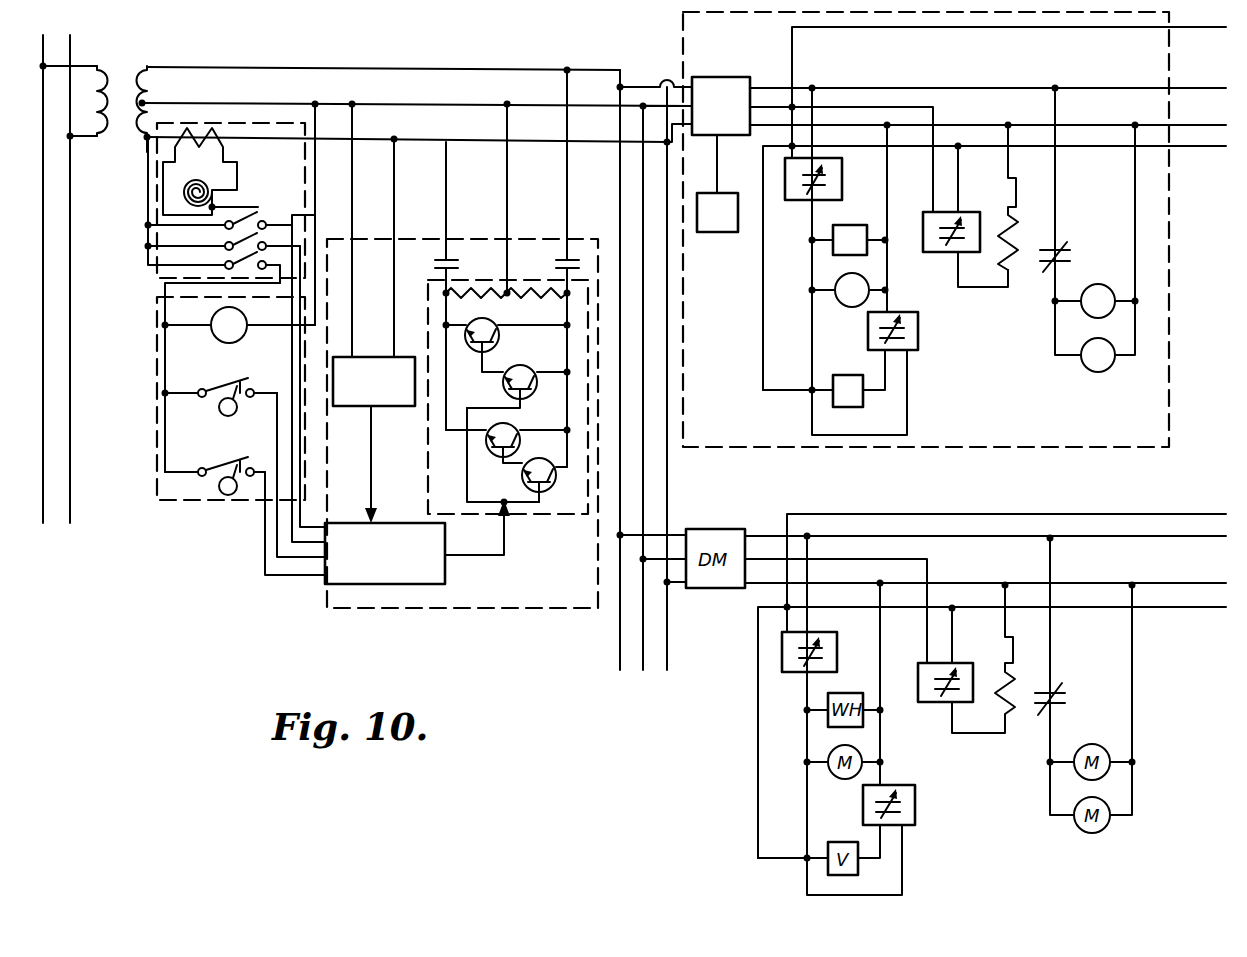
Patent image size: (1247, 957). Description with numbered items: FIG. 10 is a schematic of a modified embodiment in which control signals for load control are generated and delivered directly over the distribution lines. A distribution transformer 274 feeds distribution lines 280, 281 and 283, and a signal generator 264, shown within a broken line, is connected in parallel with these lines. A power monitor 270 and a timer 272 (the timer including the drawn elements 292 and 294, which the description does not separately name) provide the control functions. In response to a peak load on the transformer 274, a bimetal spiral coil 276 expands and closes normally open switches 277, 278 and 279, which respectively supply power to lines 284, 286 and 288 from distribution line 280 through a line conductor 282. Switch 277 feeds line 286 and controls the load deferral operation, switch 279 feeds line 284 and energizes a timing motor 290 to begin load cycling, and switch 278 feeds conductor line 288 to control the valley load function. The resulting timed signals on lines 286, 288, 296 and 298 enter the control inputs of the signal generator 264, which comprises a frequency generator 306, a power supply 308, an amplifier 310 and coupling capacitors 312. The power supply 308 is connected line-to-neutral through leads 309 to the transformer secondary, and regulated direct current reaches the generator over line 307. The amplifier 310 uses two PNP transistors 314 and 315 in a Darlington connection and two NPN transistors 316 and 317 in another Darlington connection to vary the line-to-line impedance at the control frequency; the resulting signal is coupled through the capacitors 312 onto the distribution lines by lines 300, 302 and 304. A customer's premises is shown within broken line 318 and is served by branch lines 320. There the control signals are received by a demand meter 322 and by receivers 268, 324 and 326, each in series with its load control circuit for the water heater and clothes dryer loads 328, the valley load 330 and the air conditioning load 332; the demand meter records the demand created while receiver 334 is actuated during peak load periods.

The signal generator 264 is at (440, 608).
The receiver 268 is at (835, 201).
The power monitor 270 is at (157, 177).
The timer 272 is at (157, 455).
The distribution transformer 274 is at (118, 74).
The bimetal spiral coil 276 is at (214, 184).
The normally open switch 277 is at (257, 215).
The normally open switch 278 is at (224, 242).
The normally open switch 279 is at (224, 262).
The distribution line 280 is at (411, 138).
The distribution line 281 is at (389, 104).
The line conductor 282 is at (147, 153).
The distribution line 283 is at (431, 70).
The line 284 is at (163, 289).
The line 286 is at (305, 215).
The conductor line 288 is at (298, 383).
The timing motor 290 is at (223, 343).
The timer switch 292 is at (227, 417).
The timer switch 294 is at (218, 487).
The line 296 is at (277, 530).
The line 298 is at (272, 559).
The line 300 is at (446, 193).
The line 302 is at (507, 193).
The line 304 is at (567, 190).
The frequency generator 306 is at (366, 520).
The line 307 is at (371, 435).
The power supply 308 is at (394, 356).
The leads 309 is at (353, 170).
The amplifier circuit 310 is at (572, 516).
The coupling capacitors 312 is at (440, 262).
The PNP transistor 314 is at (523, 478).
The PNP transistor 315 is at (520, 430).
The NPN transistor 316 is at (521, 365).
The NPN transistor 317 is at (493, 319).
The customer's premises 318 is at (1169, 262).
The branch lines 320 is at (622, 86).
The demand meter 322 is at (724, 77).
The receiver 324 is at (918, 345).
The receiver 326 is at (958, 215).
The water heater and clothes dryer loads 328 is at (845, 276).
The valley load 330 is at (848, 408).
The air conditioning load 332 is at (1098, 338).
The receiver 334 is at (718, 191).